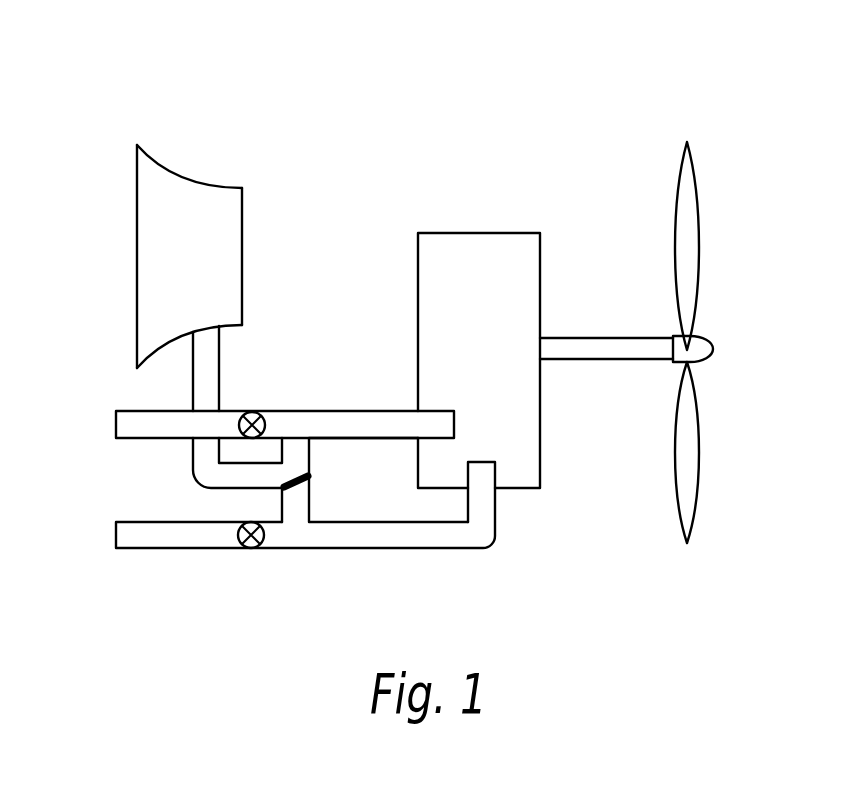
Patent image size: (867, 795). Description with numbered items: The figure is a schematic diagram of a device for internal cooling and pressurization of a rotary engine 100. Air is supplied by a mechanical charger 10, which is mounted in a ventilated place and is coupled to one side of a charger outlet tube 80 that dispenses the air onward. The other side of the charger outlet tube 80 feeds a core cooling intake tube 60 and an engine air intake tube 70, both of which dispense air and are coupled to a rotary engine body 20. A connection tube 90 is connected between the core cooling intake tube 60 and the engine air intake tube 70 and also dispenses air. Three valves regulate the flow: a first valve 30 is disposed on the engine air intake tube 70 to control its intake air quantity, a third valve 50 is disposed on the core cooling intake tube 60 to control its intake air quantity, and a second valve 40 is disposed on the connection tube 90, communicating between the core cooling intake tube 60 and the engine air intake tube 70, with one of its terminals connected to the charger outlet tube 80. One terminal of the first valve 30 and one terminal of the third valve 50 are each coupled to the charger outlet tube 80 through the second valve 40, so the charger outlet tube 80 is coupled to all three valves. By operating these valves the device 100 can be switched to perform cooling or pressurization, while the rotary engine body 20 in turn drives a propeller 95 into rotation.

The device for internal cooling and pressurization of a rotary engine 100 is at (450, 47).
The mechanical charger 10 is at (183, 190).
The rotary engine body 20 is at (473, 248).
The first valve 30 is at (251, 549).
The second valve 40 is at (311, 478).
The third valve 50 is at (254, 412).
The core cooling intake tube 60 is at (117, 425).
The engine air intake tube 70 is at (117, 535).
The charger outlet tube 80 is at (197, 389).
The connection tube 90 is at (298, 450).
The propeller 95 is at (688, 233).